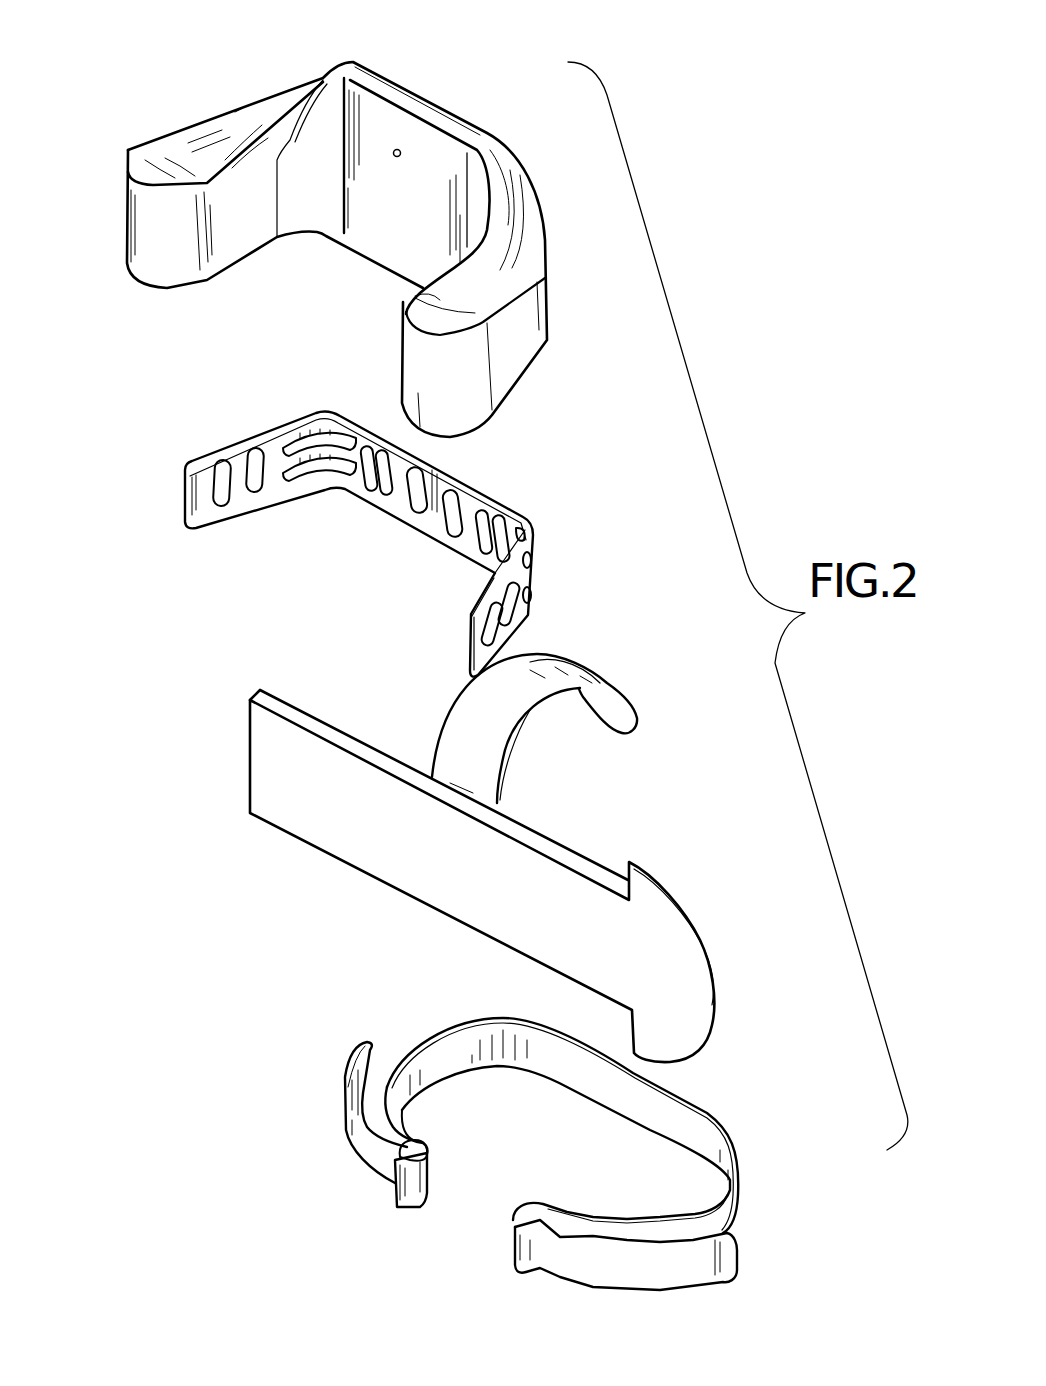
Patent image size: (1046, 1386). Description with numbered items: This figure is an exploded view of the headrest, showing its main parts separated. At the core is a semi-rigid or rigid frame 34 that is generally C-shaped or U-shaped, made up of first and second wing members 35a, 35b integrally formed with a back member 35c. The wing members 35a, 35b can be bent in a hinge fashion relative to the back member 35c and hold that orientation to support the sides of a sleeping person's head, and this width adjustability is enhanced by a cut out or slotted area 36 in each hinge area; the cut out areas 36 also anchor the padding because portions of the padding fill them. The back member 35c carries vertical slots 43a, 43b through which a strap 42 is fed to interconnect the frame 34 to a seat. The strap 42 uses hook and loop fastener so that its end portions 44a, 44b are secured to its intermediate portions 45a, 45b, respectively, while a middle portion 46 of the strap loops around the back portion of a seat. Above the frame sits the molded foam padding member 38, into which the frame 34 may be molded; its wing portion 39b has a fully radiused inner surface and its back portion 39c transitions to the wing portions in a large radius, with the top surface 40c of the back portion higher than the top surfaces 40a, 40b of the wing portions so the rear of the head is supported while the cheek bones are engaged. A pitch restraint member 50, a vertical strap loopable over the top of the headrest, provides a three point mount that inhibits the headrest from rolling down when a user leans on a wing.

The frame 34 is at (158, 464).
The first wing member 35a is at (517, 630).
The second wing member 35b is at (235, 445).
The back member 35c is at (414, 530).
The cut out area 36 is at (322, 465).
The padding member 38 is at (210, 94).
The second wing portion 39b is at (200, 168).
The back portion 39c is at (423, 96).
The top surface of first wing portion 40a is at (437, 285).
The top surface of second wing portion 40b is at (247, 147).
The top surface of back portion 40c is at (452, 122).
The strap 42 is at (740, 1195).
The vertical slot 43a is at (377, 488).
The vertical slot 43b is at (478, 553).
The end portion of strap 44a is at (723, 1257).
The end portion of strap 44b is at (350, 1057).
The intermediate portion of strap 45a is at (676, 1232).
The intermediate portion of strap 45b is at (393, 1057).
The middle portion of strap 46 is at (732, 973).
The pitch restraint member 50 is at (640, 718).